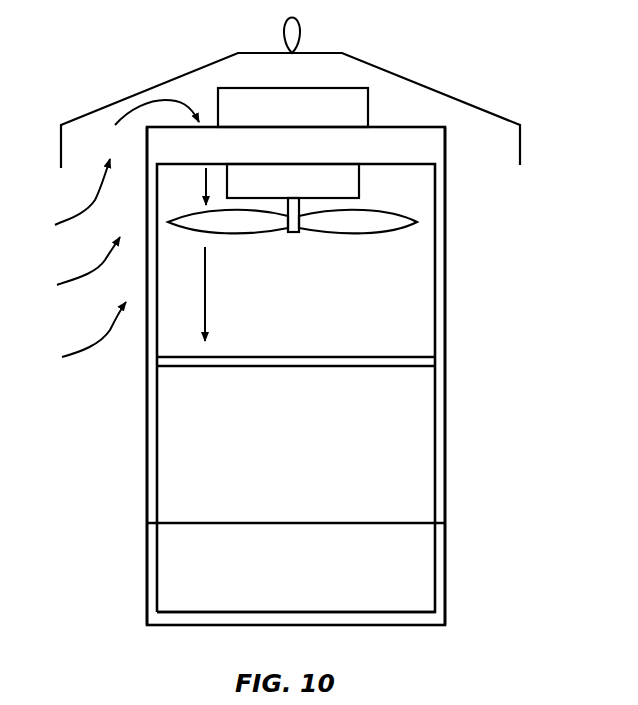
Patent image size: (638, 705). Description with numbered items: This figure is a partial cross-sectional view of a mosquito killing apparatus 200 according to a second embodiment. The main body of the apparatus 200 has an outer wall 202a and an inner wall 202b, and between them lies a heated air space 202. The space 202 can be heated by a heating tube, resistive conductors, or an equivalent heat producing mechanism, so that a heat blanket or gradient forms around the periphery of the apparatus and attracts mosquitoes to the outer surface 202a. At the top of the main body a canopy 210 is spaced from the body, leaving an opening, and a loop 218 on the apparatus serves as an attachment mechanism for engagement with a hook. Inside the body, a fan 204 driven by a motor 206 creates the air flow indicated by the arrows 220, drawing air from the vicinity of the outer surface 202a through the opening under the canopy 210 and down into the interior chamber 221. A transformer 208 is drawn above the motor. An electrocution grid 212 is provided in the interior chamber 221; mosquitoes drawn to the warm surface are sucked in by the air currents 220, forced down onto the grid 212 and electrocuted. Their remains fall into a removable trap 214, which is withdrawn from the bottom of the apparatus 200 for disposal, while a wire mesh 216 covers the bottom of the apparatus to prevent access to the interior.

The apparatus 200 is at (514, 40).
The heated air space 202 is at (296, 376).
The outer wall 202a is at (447, 300).
The inner wall 202b is at (296, 388).
The fan 204 is at (412, 220).
The motor 206 is at (361, 183).
The transformer 208 is at (368, 106).
The canopy 210 is at (482, 107).
The electrocution grid 212 is at (417, 369).
The removable trap 214 is at (418, 558).
The wire mesh 216 is at (418, 522).
The loop 218 is at (300, 35).
The air flow arrows 220 is at (156, 100).
The interior chamber 221 is at (318, 456).